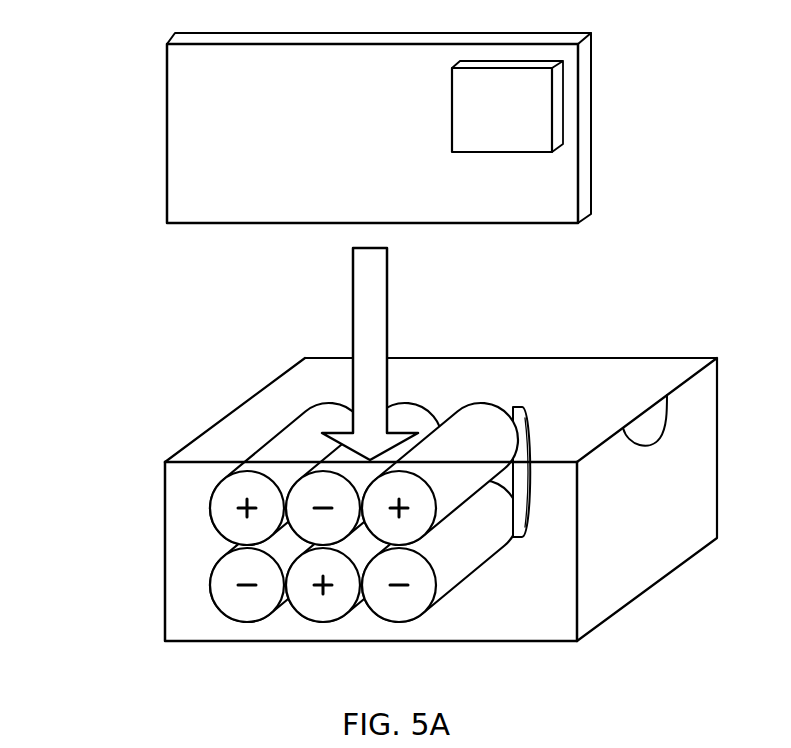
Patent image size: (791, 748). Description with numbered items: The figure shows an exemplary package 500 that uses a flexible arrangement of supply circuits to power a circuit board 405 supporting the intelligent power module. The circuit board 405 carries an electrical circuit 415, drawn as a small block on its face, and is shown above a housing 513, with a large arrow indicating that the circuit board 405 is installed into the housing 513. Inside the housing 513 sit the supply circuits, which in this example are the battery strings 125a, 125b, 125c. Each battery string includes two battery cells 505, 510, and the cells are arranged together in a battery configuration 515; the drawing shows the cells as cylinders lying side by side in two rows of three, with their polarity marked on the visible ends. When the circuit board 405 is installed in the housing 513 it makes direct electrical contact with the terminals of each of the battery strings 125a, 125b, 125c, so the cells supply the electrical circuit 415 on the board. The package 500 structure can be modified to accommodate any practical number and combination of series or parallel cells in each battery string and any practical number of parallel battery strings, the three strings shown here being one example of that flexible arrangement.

The package 500 is at (102, 78).
The circuit board 405 is at (288, 152).
The electrical circuit 415 is at (500, 95).
The battery cell 505 is at (491, 452).
The battery cell 510 is at (329, 550).
The housing 513 is at (441, 483).
The battery configuration 515 is at (552, 378).
The battery string 125a is at (374, 632).
The battery string 125b is at (288, 632).
The battery string 125c is at (202, 632).